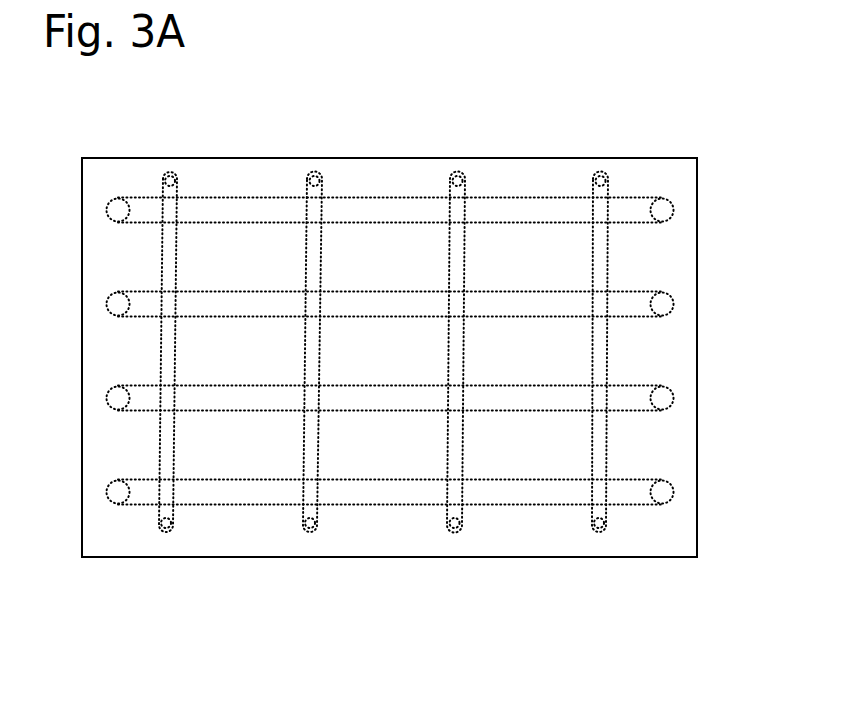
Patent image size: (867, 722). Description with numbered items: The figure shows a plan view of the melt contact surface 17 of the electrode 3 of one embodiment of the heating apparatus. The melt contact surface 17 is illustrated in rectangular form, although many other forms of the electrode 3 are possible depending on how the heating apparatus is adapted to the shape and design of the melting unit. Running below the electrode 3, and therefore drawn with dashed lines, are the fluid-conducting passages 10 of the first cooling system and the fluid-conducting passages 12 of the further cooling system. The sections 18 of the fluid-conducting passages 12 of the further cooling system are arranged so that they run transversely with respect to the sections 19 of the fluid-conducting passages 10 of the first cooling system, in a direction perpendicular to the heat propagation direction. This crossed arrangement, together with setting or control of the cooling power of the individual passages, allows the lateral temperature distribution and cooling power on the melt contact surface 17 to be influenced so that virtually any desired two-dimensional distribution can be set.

The electrode 3 is at (228, 158).
The melt contact surface 17 is at (523, 178).
The fluid-conducting passages of the first cooling system 10 is at (672, 307).
The sections of the fluid-conducting passages of the first cooling system 19 is at (640, 198).
The sections of the fluid-conducting passages of the further cooling system 18 is at (593, 258).
The fluid-conducting passages of the further cooling system 12 is at (596, 528).